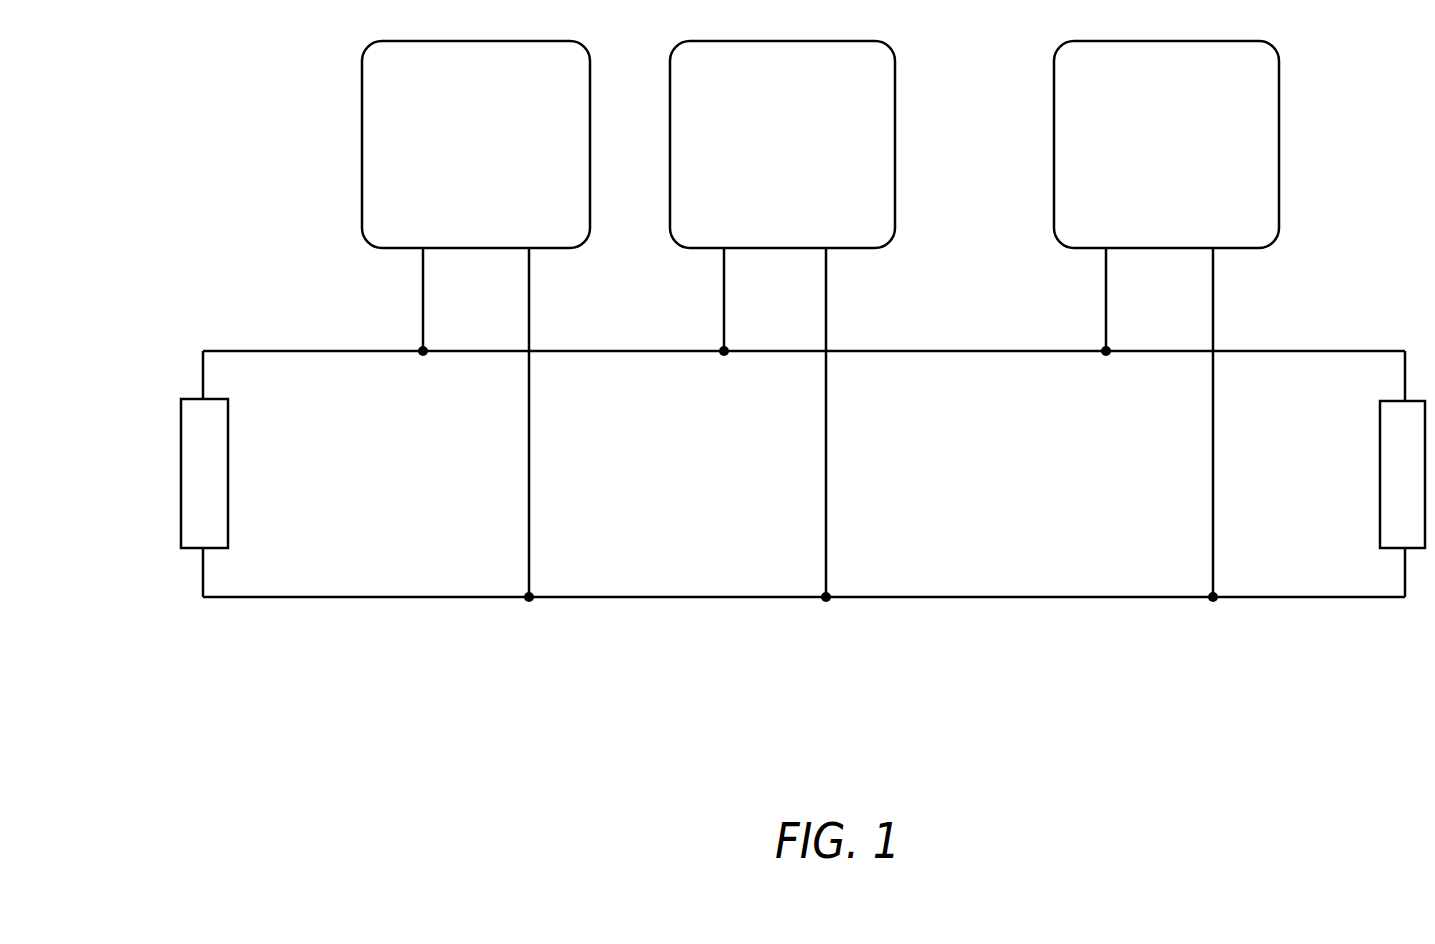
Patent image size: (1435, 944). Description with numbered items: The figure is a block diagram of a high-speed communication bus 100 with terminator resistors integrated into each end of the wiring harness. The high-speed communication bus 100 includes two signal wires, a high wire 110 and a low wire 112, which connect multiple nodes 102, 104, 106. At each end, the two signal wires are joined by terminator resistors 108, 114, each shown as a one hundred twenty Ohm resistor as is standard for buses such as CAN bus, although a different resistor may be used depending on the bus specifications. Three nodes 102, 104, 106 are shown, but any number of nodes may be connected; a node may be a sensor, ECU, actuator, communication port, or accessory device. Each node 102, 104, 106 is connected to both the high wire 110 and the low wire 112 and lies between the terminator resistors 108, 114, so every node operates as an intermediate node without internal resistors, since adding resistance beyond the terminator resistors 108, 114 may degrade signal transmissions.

The high-speed communication bus 100 is at (307, 132).
The node 102 is at (453, 176).
The node 104 is at (762, 176).
The node 106 is at (1146, 176).
The terminator resistor 108 is at (181, 399).
The high wire 110 is at (315, 351).
The low wire 112 is at (437, 596).
The terminator resistor 114 is at (1380, 425).